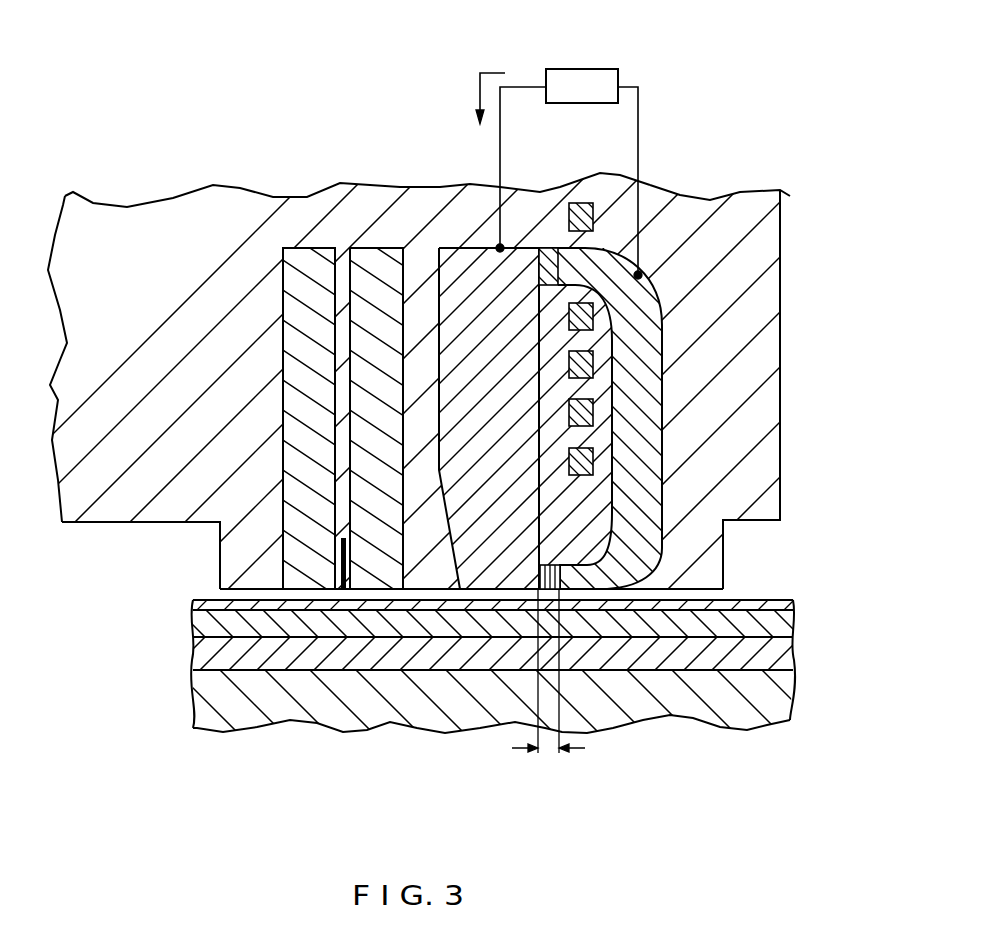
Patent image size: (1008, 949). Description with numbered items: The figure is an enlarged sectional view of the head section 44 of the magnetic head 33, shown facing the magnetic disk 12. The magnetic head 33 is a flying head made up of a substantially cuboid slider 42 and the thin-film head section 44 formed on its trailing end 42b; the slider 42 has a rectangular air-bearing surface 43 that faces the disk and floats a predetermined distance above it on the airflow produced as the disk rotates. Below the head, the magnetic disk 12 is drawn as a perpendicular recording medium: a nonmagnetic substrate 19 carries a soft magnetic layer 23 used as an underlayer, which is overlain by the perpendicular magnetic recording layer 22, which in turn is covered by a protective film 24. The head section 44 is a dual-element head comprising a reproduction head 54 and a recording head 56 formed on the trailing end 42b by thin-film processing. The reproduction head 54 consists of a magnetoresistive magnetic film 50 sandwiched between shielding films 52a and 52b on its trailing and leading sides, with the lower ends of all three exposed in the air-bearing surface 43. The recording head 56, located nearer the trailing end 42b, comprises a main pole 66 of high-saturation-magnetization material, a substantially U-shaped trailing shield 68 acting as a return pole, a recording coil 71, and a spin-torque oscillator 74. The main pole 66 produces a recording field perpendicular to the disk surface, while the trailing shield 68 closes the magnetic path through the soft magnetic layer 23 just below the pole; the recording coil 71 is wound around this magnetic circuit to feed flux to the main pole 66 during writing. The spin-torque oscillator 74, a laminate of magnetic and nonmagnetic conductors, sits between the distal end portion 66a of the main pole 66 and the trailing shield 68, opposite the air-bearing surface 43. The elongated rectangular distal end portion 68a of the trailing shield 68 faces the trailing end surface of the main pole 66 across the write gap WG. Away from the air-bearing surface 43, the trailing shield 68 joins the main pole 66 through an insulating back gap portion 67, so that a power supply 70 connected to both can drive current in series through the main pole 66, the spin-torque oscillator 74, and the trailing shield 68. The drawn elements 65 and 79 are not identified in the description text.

The magnetic disk 12 is at (805, 595).
The substrate 19 is at (200, 707).
The perpendicular magnetic recording layer 22 is at (200, 625).
The soft magnetic layer 23 is at (200, 655).
The protective film 24 is at (200, 603).
The magnetic head 33 is at (224, 162).
The slider 42 is at (108, 218).
The trailing end 42b is at (782, 232).
The air-bearing surface 43 is at (101, 524).
The head section 44 is at (372, 140).
The magnetic film 50 is at (340, 560).
The shielding film 52a is at (396, 295).
The shielding film 52b is at (288, 300).
The reproduction head 54 is at (280, 243).
The recording head 56 is at (468, 165).
The insulating layer 65 is at (606, 254).
The main pole 66 is at (497, 477).
The distal end portion 66a is at (473, 572).
The back gap portion 67 is at (546, 246).
The trailing shield 68 is at (642, 367).
The distal end portion 68a is at (592, 575).
The power supply 70 is at (572, 68).
The recording coil 71 is at (598, 456).
The spin-torque oscillator 74 is at (548, 564).
The trailing shield 79 is at (708, 214).
The write gap WG is at (552, 752).